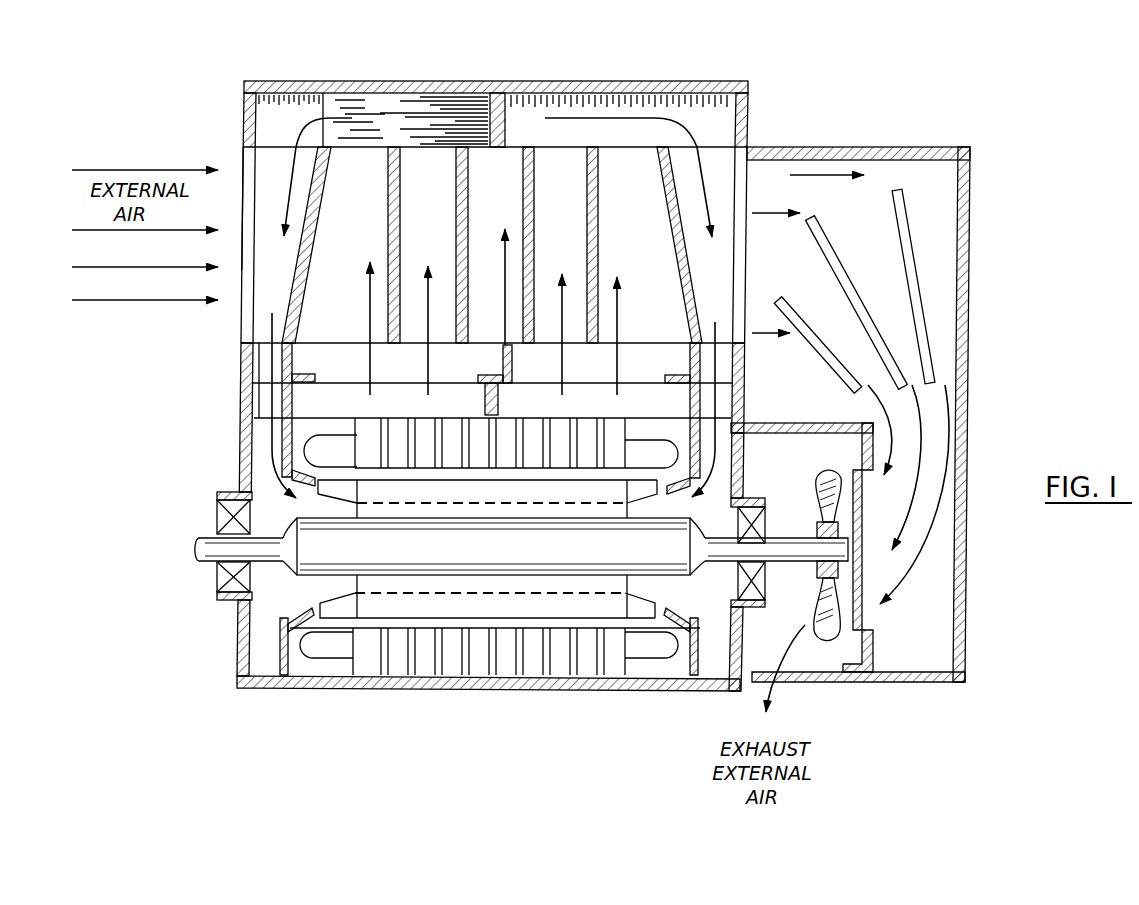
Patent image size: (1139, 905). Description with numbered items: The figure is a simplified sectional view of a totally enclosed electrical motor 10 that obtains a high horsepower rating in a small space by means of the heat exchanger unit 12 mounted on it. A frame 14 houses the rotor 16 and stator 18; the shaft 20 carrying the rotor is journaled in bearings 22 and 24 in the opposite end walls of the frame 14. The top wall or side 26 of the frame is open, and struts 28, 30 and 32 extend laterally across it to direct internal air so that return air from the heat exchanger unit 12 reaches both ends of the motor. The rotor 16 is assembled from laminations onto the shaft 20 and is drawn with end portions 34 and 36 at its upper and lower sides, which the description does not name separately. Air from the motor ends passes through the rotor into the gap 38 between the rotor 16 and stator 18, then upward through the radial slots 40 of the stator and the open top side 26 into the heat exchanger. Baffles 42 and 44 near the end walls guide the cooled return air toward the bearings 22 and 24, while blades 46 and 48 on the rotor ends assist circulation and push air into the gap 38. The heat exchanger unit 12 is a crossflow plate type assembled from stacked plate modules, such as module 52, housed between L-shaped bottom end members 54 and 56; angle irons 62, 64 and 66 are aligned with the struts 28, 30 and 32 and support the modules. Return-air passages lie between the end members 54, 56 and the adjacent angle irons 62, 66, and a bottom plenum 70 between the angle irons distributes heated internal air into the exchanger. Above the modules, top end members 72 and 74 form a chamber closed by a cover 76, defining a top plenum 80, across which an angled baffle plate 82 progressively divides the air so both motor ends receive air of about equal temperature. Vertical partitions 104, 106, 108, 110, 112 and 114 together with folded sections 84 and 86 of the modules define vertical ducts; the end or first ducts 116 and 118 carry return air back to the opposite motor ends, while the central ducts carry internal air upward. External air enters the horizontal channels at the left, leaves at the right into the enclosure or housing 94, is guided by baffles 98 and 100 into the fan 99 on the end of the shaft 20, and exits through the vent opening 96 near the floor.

The totally enclosed electrical motor 10 is at (541, 730).
The heat exchanger unit 12 is at (372, 78).
The frame 14 is at (242, 421).
The rotor 16 is at (382, 585).
The stator 18 is at (445, 672).
The shaft 20 is at (472, 561).
The bearing 22 is at (216, 578).
The bearing 24 is at (770, 518).
The top wall or side 26 is at (348, 383).
The strut 28 is at (294, 400).
The strut 30 is at (498, 405).
The strut 32 is at (692, 406).
The rotor end ring 34 is at (470, 503).
The rotor end ring 36 is at (497, 596).
The gap 38 is at (553, 640).
The radial slots 40 is at (441, 432).
The baffle 42 is at (282, 479).
The baffle 44 is at (744, 456).
The blades 46 is at (322, 600).
The blades 48 is at (648, 504).
The plate module 52 is at (712, 147).
The bottom end member 54 is at (242, 361).
The bottom end member 56 is at (746, 368).
The angle iron 62 is at (296, 356).
The angle iron 64 is at (512, 383).
The angle iron 66 is at (687, 360).
The bottom plenum 70 is at (383, 367).
The top end member 72 is at (244, 110).
The top end member 74 is at (748, 122).
The cover 76 is at (470, 81).
The top plenum 80 is at (296, 120).
The baffle plate 82 is at (412, 107).
The folded section 84 is at (244, 153).
The folded section 86 is at (850, 389).
The enclosure or housing 94 is at (968, 233).
The vent opening 96 is at (790, 682).
The baffles 98 is at (910, 220).
The fan 99 is at (817, 602).
The baffle 100 is at (880, 423).
The partition 104 is at (308, 232).
The partition 106 is at (400, 196).
The partition 108 is at (468, 183).
The partition 110 is at (534, 200).
The partition 112 is at (598, 198).
The partition 114 is at (673, 240).
The end or first duct 116 is at (288, 277).
The end or first duct 118 is at (724, 282).